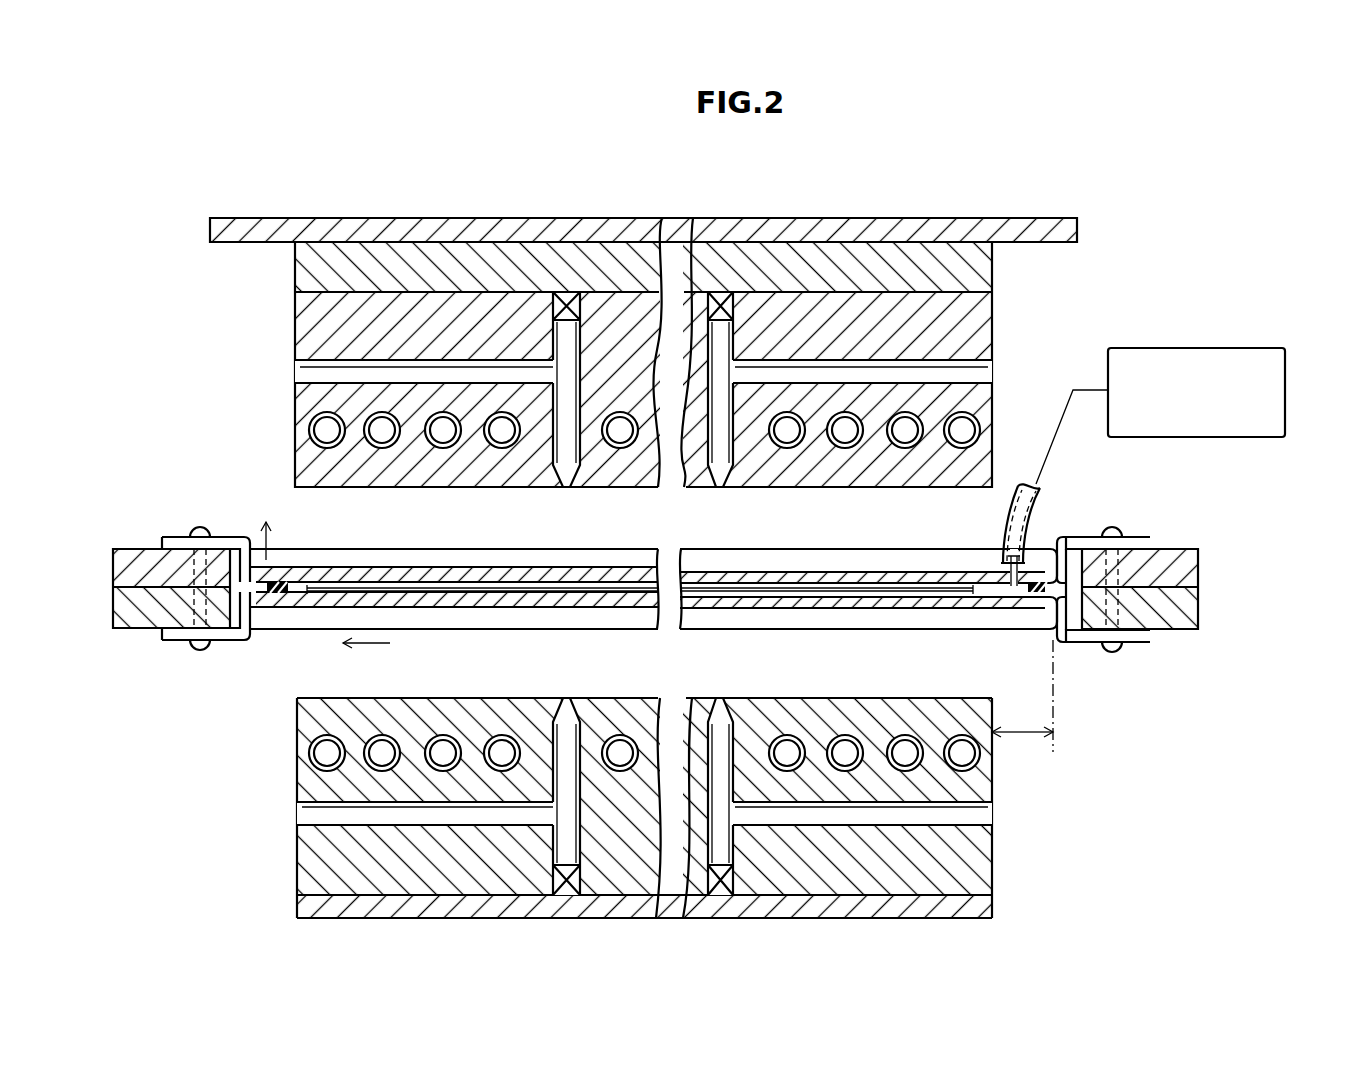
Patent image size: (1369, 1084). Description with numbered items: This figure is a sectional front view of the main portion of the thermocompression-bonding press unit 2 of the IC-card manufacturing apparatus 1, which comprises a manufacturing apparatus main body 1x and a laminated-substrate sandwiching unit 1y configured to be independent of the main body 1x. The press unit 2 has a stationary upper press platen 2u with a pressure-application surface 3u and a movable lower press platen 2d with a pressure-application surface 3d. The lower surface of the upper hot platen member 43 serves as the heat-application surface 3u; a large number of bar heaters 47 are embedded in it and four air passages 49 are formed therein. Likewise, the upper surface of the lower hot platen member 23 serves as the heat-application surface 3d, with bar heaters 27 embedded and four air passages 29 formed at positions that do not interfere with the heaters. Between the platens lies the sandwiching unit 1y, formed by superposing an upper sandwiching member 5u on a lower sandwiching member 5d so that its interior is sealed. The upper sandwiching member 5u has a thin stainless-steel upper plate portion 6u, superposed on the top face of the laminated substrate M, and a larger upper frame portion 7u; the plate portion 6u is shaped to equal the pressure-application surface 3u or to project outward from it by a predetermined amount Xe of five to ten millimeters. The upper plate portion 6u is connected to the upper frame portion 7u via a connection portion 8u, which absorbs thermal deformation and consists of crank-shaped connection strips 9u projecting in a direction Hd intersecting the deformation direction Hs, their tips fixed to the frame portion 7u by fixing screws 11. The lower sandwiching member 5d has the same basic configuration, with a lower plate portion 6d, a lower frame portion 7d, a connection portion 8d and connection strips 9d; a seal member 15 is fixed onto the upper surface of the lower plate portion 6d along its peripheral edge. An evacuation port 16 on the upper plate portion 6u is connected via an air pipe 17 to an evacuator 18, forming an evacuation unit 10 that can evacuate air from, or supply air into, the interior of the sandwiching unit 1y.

The IC-card manufacturing apparatus 1 is at (1170, 236).
The manufacturing apparatus main body 1x is at (1152, 314).
The laminated-substrate sandwiching unit 1y is at (1236, 574).
The press unit 2 is at (1076, 292).
The upper press platen 2u is at (210, 318).
The movable press platen 2d is at (245, 856).
The pressure-application surface 3u is at (437, 488).
The pressure-application surface 3d is at (440, 697).
The upper sandwiching member 5u is at (288, 522).
The lower sandwiching member 5d is at (290, 650).
The upper plate portion 6u is at (817, 572).
The lower plate portion 6d is at (813, 608).
The upper frame portion 7u is at (1190, 547).
The lower frame portion 7d is at (1182, 630).
The connection portion 8u is at (1073, 526).
The connection portion 8d is at (1072, 658).
The connection strips 9u is at (166, 540).
The connection strips 9d is at (172, 643).
The evacuation unit 10 is at (1258, 320).
The fixing screws 11 is at (198, 526).
The seal member 15 is at (298, 593).
The evacuation port 16 is at (1028, 594).
The air pipe 17 is at (1005, 524).
The evacuator 18 is at (1287, 400).
The hot platen member 23 is at (297, 850).
The bar heaters 27 is at (366, 760).
The air passages 29 is at (438, 820).
The hot platen member 43 is at (295, 338).
The bar heaters 47 is at (372, 442).
The air passages 49 is at (497, 370).
The laminated substrate M is at (887, 603).
The projecting direction Hd is at (266, 557).
The deformation direction Hs is at (382, 643).
The predetermined amount Xe is at (1025, 740).